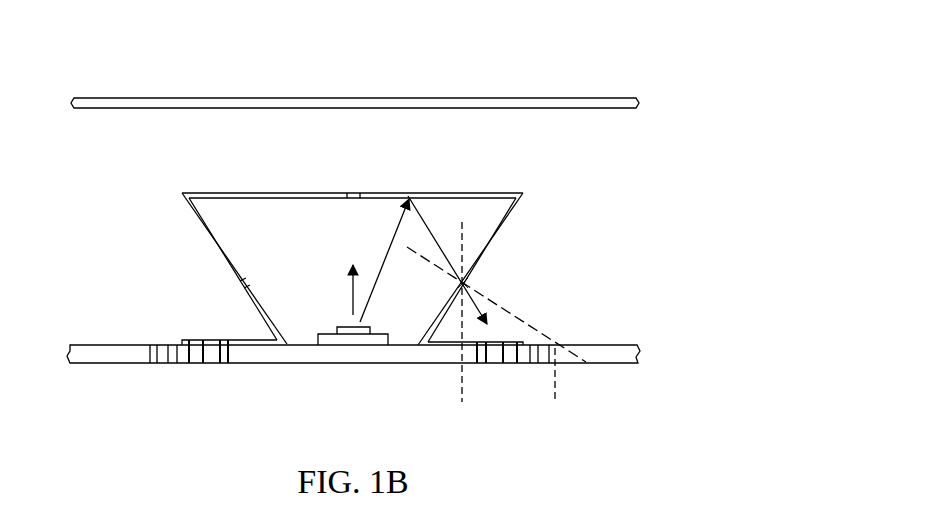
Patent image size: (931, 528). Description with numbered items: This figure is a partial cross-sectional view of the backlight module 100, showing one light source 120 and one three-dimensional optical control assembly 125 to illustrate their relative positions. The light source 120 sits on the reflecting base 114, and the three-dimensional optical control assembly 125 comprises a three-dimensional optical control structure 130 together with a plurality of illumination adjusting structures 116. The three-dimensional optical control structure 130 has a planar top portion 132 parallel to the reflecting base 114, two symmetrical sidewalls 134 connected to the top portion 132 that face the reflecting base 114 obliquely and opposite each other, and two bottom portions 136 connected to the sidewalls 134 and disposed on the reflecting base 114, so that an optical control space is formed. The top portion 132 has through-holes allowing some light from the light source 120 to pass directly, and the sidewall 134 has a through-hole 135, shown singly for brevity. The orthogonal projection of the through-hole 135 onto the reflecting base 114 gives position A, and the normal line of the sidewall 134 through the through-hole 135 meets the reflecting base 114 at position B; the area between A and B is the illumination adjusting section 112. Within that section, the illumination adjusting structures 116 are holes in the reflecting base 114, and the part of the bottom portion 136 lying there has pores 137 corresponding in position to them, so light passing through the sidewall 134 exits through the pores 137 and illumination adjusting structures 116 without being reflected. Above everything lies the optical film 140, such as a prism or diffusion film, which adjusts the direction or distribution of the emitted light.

The backlight module 100 is at (92, 70).
The optical film 140 is at (604, 100).
The 3D optical control assembly 125 is at (710, 207).
The 3D optical control structure 130 is at (651, 143).
The top portion 132 is at (452, 195).
The sidewall 134 is at (508, 222).
The through-hole 135 is at (467, 283).
The bottom portion 136 is at (497, 341).
The pore 137 is at (514, 341).
The illumination adjusting structure 116 is at (554, 344).
The reflecting base 114 is at (639, 350).
The light source 120 is at (347, 336).
The illumination adjusting section 112 is at (555, 379).